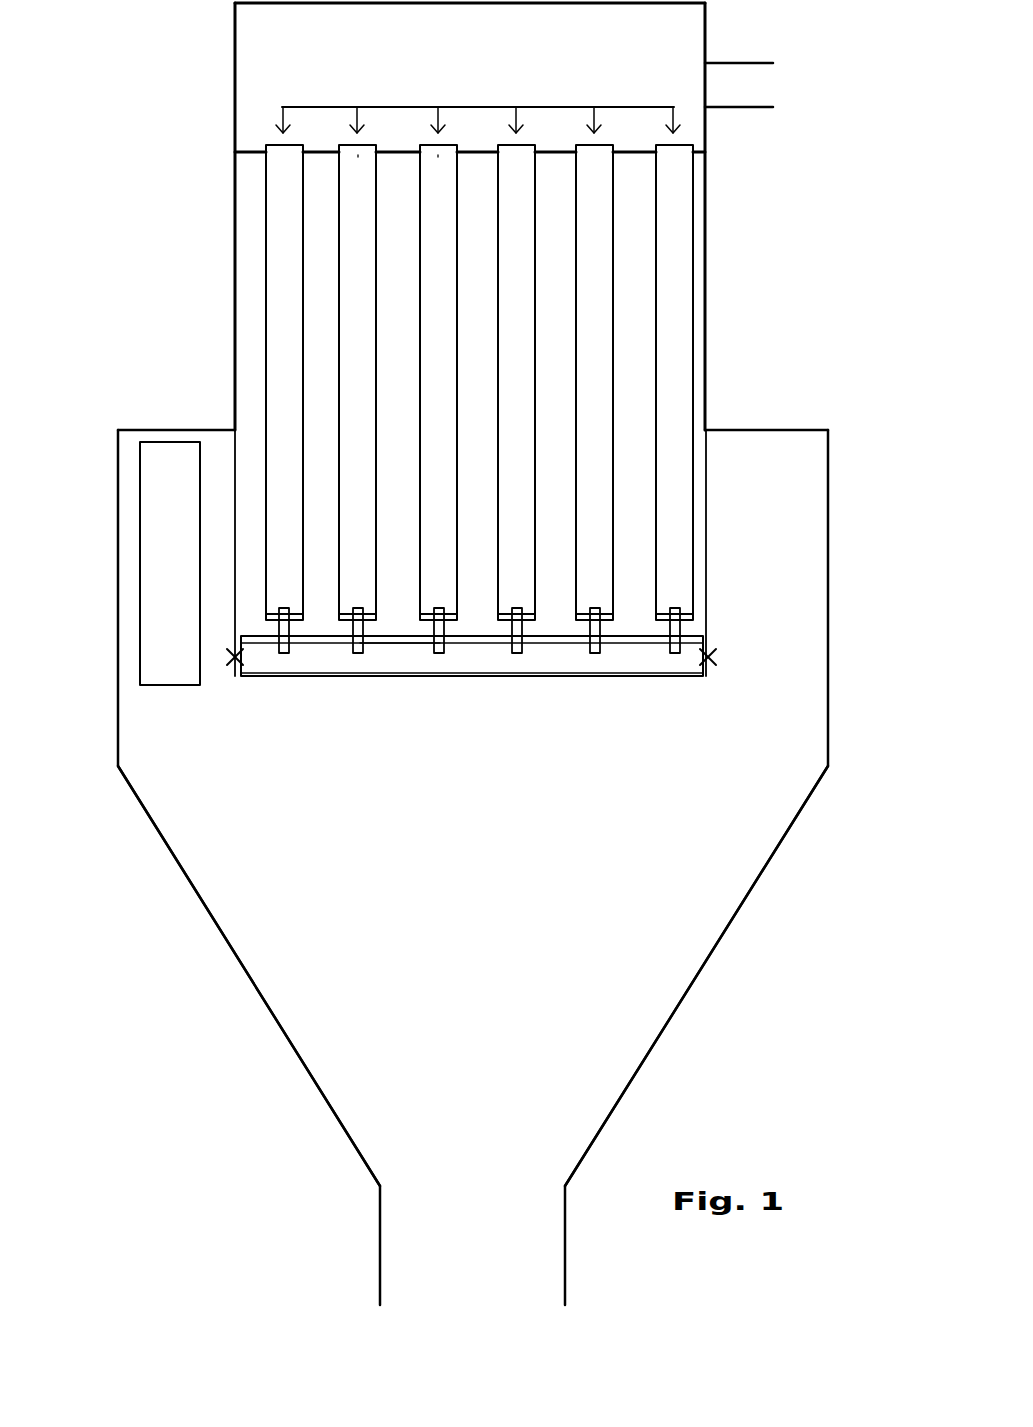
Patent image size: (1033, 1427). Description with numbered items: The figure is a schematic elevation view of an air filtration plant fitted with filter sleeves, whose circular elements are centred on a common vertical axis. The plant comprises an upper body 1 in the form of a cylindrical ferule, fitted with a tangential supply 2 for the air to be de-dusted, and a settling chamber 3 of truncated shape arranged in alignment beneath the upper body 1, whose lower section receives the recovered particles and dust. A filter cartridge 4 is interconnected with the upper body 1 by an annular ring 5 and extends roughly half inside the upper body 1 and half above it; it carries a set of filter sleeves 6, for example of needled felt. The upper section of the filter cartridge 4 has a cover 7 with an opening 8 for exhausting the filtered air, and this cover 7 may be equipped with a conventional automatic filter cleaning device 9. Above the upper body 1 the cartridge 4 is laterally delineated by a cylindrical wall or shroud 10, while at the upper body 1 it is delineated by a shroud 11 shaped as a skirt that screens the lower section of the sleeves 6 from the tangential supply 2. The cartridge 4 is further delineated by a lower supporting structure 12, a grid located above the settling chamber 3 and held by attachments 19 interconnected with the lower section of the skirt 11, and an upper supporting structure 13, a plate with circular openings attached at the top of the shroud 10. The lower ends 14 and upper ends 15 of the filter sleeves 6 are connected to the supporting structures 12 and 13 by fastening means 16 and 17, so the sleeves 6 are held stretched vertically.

The upper body 1 is at (112, 710).
The tangential supply 2 is at (166, 472).
The settling chamber 3 is at (248, 986).
The filter cartridge 4 is at (228, 228).
The annular ring 5 is at (160, 424).
The filter sleeves 6 is at (600, 240).
The cover 7 is at (228, 40).
The opening 8 is at (742, 56).
The automatic filter cleaning device 9 is at (485, 100).
The cylindrical wall or shroud 10 is at (712, 343).
The shroud 11 is at (229, 543).
The lower supporting structure 12 is at (598, 682).
The upper supporting structure 13 is at (552, 145).
The lower ends 14 is at (506, 630).
The upper ends 15 is at (344, 138).
The fastening means 16 is at (426, 642).
The fastening means 17 is at (438, 160).
The attachments 19 is at (226, 668).